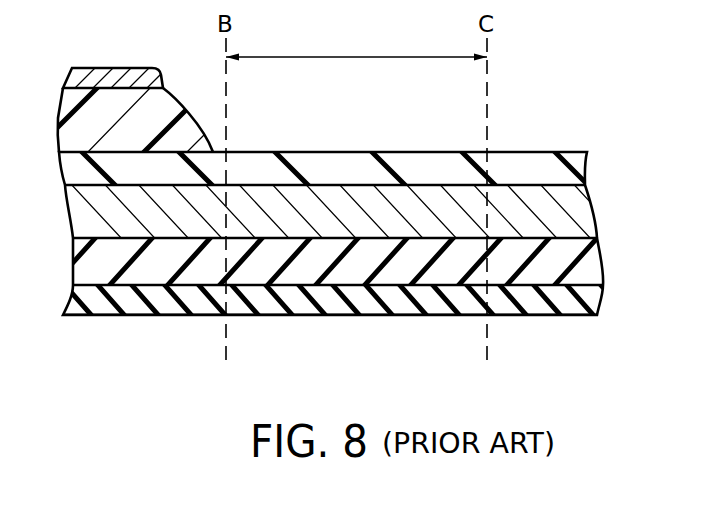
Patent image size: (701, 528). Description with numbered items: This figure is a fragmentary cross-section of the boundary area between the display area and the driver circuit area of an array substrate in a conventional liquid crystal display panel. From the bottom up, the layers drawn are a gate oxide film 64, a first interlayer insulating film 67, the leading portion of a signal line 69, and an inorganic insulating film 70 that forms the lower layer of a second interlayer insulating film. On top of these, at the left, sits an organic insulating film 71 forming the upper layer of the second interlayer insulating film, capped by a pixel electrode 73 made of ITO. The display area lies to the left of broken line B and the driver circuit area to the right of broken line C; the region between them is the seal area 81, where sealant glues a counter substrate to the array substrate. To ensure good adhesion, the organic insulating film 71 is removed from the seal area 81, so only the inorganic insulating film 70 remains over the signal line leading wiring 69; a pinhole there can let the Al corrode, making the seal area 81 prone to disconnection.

The gate oxide film 64 is at (118, 310).
The first interlayer insulating film 67 is at (268, 265).
The leading portion of a signal line 69 is at (355, 217).
The inorganic insulating film 70 is at (537, 172).
The organic insulating film 71 is at (97, 110).
The pixel electrode 73 is at (131, 73).
The seal area 81 is at (356, 45).